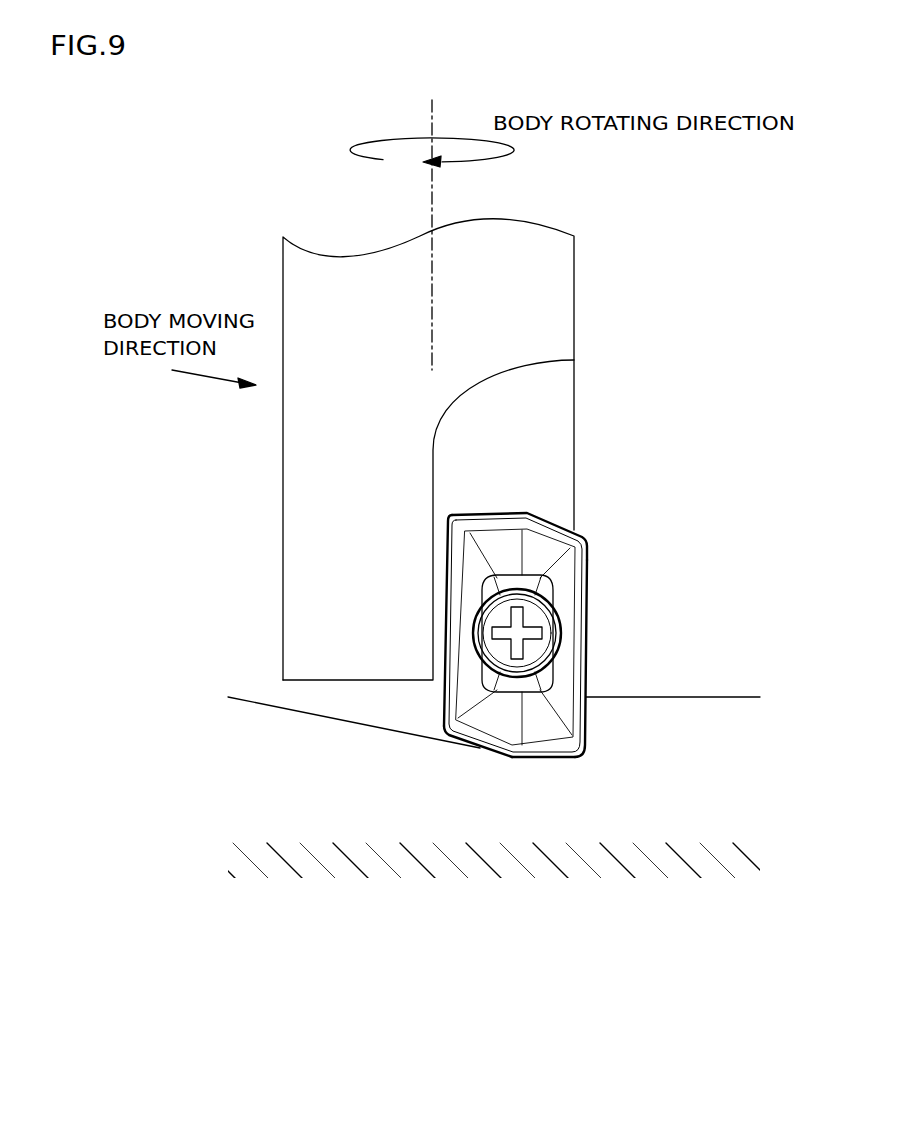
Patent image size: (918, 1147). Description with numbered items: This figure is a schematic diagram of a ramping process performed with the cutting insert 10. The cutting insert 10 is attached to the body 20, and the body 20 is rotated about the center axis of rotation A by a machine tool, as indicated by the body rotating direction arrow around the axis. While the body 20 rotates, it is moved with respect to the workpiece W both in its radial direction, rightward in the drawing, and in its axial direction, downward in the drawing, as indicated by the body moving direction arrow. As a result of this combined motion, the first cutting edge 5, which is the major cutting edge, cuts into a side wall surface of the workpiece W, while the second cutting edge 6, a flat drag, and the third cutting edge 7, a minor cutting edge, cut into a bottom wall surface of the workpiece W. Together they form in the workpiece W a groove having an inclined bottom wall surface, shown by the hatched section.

The body 20 is at (563, 305).
The cutting insert 10 is at (559, 732).
The first cutting edge 5 is at (587, 683).
The second cutting edge 6 is at (555, 757).
The third cutting edge 7 is at (476, 745).
The center axis of rotation A is at (428, 213).
The workpiece W is at (243, 705).